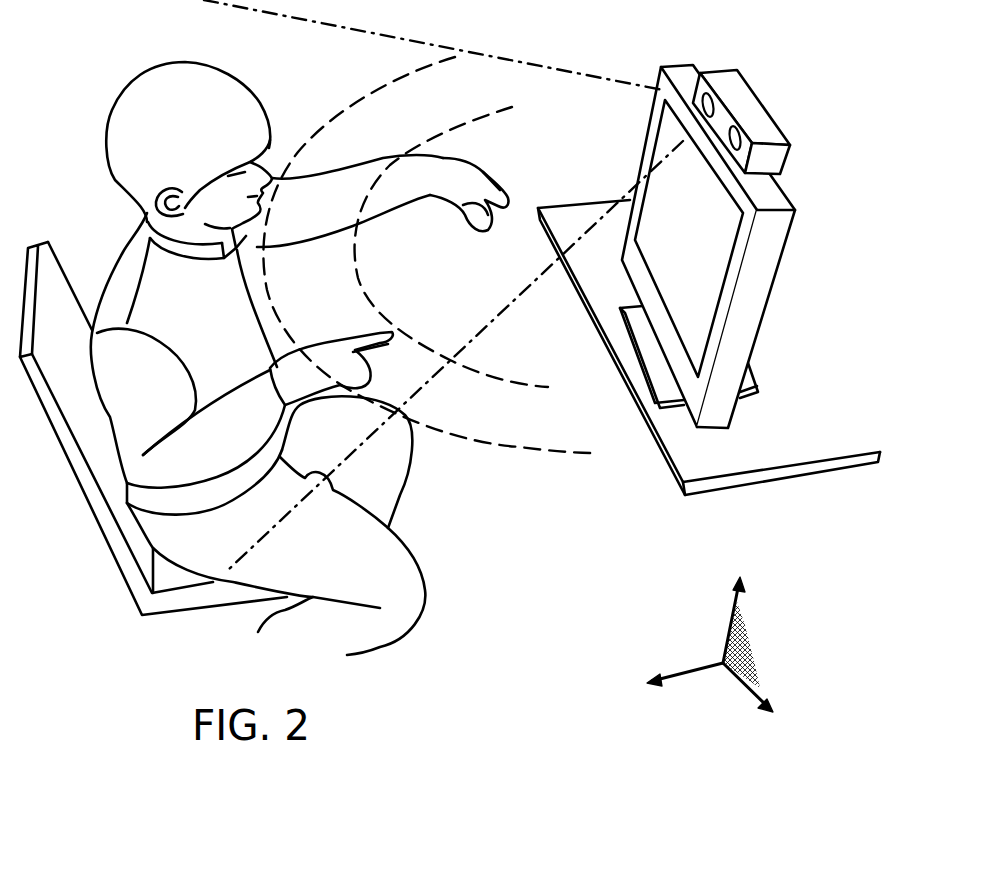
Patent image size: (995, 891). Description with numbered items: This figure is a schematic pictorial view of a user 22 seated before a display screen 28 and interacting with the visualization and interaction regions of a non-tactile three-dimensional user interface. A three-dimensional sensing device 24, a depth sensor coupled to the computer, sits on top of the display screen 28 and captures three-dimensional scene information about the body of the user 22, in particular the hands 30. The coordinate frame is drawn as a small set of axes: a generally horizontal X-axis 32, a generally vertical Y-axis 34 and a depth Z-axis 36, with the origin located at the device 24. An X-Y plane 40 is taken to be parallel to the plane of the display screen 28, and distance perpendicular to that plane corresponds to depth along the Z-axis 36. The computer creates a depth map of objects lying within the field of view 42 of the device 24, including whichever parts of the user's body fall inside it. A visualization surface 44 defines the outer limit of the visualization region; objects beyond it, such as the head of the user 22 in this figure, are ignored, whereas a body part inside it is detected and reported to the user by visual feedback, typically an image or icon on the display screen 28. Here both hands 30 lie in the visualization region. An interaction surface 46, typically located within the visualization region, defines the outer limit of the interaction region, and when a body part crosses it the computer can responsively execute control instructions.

The user 22 is at (108, 167).
The 3D sensing device 24 is at (730, 79).
The display screen 28 is at (782, 202).
The hands 30 is at (460, 213).
The X-axis 32 is at (760, 712).
The Y-axis 34 is at (738, 612).
The Z-axis 36 is at (680, 676).
The X-Y plane 40 is at (753, 639).
The field of view 42 is at (600, 78).
The visualization surface 44 is at (549, 452).
The interaction surface 46 is at (549, 388).